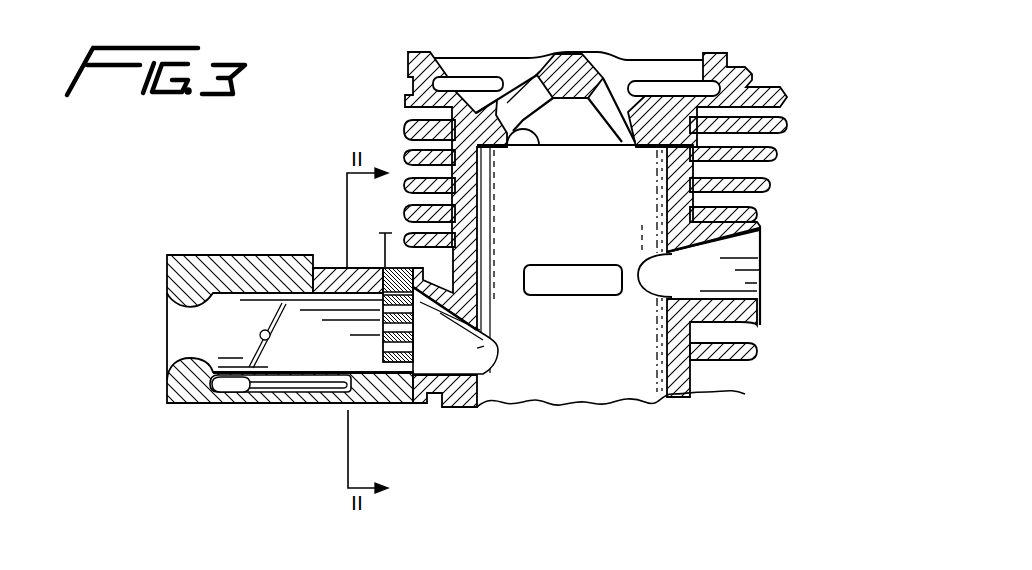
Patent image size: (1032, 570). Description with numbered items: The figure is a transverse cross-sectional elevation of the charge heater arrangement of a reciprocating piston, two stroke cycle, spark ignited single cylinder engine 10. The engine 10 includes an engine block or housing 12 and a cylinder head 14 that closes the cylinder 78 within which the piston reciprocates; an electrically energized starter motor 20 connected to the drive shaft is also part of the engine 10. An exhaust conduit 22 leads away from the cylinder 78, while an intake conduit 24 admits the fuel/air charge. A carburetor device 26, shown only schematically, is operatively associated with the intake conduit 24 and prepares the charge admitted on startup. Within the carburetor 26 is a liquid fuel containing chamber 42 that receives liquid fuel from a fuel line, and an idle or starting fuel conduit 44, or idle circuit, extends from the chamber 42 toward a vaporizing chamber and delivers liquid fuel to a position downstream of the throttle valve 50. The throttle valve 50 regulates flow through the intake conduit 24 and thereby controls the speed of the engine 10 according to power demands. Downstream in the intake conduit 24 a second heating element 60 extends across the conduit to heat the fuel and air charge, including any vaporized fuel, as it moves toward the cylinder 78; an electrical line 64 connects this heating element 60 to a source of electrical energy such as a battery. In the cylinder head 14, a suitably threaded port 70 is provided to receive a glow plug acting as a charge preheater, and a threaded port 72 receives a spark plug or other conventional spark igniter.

The engine 10 is at (384, 118).
The engine block or housing 12 is at (692, 392).
The cylinder head 14 is at (407, 97).
The starter motor 20 is at (630, 398).
The exhaust conduit 22 is at (740, 326).
The intake conduit 24 is at (329, 266).
The carburetor device 26 is at (195, 255).
The liquid fuel containing chamber 42 is at (215, 403).
The idle or starting fuel conduit 44 is at (320, 402).
The throttle valve 50 is at (255, 348).
The second heating element 60 is at (430, 405).
The electrical line 64 is at (372, 244).
The port 70 is at (537, 142).
The threaded port 72 is at (635, 112).
The cylinder 78 is at (477, 390).